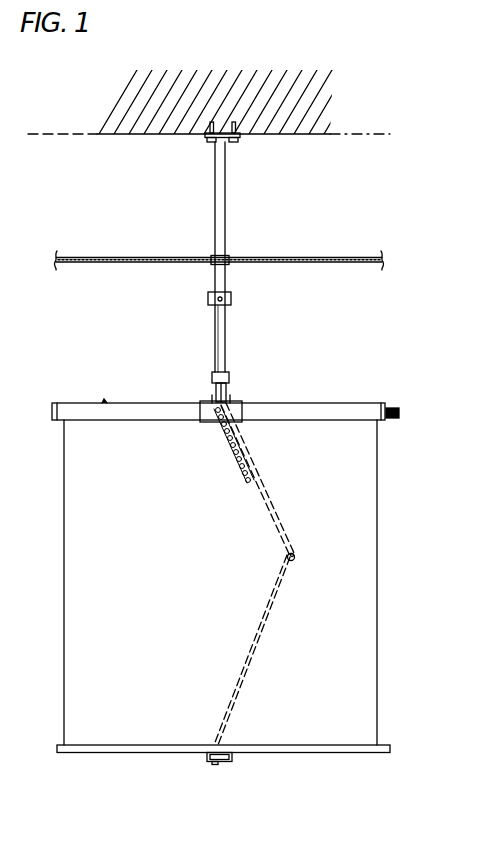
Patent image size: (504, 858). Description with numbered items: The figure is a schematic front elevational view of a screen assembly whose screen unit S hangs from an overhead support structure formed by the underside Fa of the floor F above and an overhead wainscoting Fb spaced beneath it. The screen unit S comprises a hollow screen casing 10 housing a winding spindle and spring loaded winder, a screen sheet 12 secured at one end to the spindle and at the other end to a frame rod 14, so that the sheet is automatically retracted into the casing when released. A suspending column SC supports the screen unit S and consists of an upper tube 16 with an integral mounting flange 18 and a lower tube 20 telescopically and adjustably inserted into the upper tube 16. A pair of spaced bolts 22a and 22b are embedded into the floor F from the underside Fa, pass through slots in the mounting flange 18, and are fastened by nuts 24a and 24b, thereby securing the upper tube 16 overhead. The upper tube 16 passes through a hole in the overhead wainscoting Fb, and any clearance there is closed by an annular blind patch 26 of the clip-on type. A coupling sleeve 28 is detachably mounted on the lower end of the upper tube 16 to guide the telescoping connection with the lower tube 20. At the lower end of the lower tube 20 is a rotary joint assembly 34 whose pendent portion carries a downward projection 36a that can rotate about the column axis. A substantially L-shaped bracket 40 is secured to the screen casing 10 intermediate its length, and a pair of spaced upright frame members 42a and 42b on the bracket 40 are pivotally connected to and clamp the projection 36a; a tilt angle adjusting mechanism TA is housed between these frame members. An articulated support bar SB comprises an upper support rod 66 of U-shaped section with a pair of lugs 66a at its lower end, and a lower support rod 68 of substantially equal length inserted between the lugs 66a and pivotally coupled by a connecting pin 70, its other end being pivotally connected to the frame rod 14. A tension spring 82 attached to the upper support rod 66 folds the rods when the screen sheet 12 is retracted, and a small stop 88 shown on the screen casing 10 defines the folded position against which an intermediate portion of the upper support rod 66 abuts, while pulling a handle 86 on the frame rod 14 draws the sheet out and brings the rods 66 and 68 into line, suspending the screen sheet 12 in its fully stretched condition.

The floor F is at (314, 104).
The underside of the floor Fa is at (116, 135).
The overhead wainscoting Fb is at (350, 262).
The suspending column SC is at (234, 250).
The tilt angle adjusting mechanism TA is at (258, 395).
The articulated support bar SB is at (268, 594).
The screen unit S is at (352, 634).
The screen casing 10 is at (363, 411).
The screen sheet 12 is at (98, 506).
The frame rod 14 is at (125, 749).
The upper tube 16 is at (226, 193).
The mounting flange 18 is at (214, 167).
The lower tube 20 is at (216, 326).
The bolt 22a is at (211, 124).
The bolt 22b is at (235, 125).
The nut 24a is at (212, 142).
The nut 24b is at (234, 142).
The annular blind patch 26 is at (229, 265).
The coupling sleeve 28 is at (208, 299).
The rotary joint assembly 34 is at (226, 372).
The projection 36a is at (227, 386).
The L-shaped bracket 40 is at (212, 401).
The upright frame member 42a is at (213, 395).
The upright frame member 42b is at (231, 393).
The upper support rod 66 is at (270, 503).
The lugs 66a is at (295, 556).
The lower support rod 68 is at (262, 643).
The connecting pin 70 is at (288, 557).
The tension spring 82 is at (228, 449).
The handle 86 is at (216, 764).
The stop nub 88 is at (104, 400).